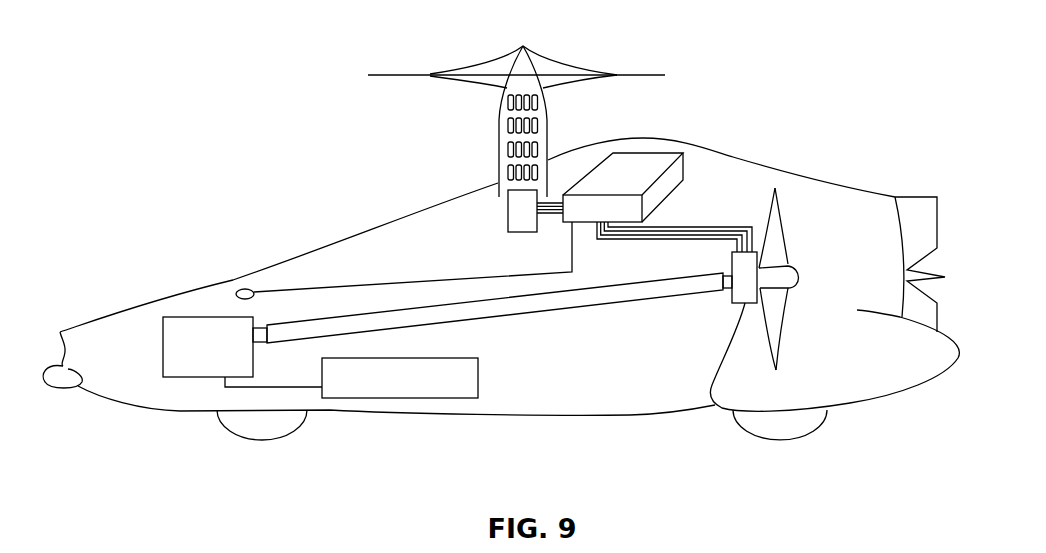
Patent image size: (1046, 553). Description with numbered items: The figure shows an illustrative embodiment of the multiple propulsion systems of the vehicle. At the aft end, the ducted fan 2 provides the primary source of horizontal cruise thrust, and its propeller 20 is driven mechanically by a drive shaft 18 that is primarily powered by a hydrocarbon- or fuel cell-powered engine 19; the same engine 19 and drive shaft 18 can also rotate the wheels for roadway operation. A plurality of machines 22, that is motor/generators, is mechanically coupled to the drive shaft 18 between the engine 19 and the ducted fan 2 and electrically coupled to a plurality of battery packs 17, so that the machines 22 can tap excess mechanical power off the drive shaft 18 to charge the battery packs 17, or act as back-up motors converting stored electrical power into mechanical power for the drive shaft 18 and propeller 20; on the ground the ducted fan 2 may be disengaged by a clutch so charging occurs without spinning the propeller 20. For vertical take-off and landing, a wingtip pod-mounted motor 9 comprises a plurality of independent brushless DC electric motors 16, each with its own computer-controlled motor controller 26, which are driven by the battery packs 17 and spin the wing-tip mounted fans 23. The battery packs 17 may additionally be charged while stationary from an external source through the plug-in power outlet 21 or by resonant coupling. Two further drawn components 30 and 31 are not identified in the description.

The ducted fan 2 is at (862, 187).
The motor 9 is at (495, 142).
The brushless DC electric motor 16 is at (538, 127).
The battery pack 17 is at (645, 168).
The drive shaft 18 is at (528, 312).
The engine 19 is at (193, 360).
The propeller 20 is at (782, 233).
The power outlet 21 is at (243, 291).
The machine 22 is at (710, 362).
The wing-tip mounted fan 23 is at (662, 73).
The motor controller 26 is at (525, 218).
The gearbox 30 is at (762, 277).
The fuel tank 31 is at (398, 385).